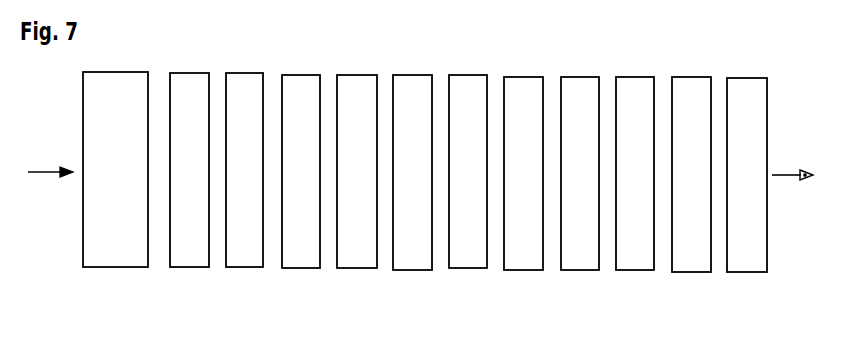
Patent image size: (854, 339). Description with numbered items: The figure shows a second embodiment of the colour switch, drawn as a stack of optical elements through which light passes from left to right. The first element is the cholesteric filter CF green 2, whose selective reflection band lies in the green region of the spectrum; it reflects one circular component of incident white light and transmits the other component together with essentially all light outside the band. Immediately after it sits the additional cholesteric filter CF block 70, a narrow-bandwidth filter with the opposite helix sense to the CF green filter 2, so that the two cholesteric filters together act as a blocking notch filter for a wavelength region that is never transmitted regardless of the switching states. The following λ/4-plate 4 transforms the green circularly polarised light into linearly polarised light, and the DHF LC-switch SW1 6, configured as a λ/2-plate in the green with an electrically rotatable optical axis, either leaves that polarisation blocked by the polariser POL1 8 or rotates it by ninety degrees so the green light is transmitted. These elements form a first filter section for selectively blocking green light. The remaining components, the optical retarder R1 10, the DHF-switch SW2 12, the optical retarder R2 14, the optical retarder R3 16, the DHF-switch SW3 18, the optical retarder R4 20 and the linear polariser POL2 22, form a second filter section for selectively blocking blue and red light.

The cholesteric filter CF green 2 is at (115, 192).
The cholesteric filter CF block 70 is at (190, 192).
The λ/4-plate 4 is at (244, 183).
The DHF LC-switch SW1 6 is at (301, 187).
The polariser POL1 8 is at (357, 187).
The optical retarder R1 10 is at (412, 187).
The DHF-switch SW2 12 is at (468, 187).
The optical retarder R2 14 is at (523, 188).
The optical retarder R3 16 is at (580, 189).
The DHF-switch SW3 18 is at (635, 189).
The optical retarder R4 20 is at (691, 189).
The linear polariser POL2 22 is at (747, 189).